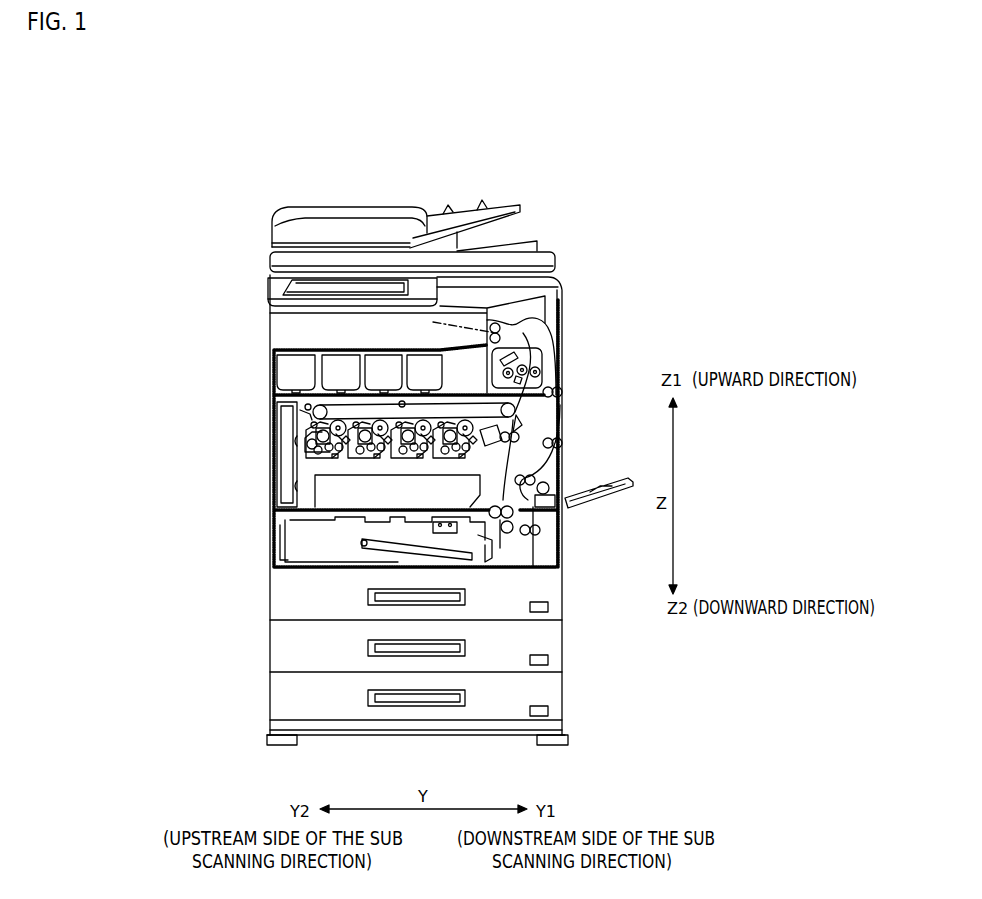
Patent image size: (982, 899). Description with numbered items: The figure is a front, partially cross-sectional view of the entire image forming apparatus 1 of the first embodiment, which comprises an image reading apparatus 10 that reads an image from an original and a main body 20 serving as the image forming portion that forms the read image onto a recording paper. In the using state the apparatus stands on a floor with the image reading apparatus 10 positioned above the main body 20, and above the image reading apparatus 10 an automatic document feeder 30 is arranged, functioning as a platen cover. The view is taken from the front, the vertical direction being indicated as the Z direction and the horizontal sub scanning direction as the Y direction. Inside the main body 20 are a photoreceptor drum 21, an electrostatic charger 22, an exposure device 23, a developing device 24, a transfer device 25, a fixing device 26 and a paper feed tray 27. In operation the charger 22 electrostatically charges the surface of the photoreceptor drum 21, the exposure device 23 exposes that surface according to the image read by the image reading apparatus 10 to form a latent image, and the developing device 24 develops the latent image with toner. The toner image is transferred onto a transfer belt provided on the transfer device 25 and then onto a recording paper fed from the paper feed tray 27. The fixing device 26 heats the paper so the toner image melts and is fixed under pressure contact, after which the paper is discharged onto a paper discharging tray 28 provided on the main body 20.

The image forming apparatus 1 is at (587, 218).
The image reading apparatus 10 is at (553, 255).
The main body 20 is at (268, 487).
The photoreceptor drum 21 is at (333, 450).
The electrostatic charger 22 is at (352, 462).
The exposure device 23 is at (481, 483).
The developing device 24 is at (326, 470).
The transfer device 25 is at (458, 402).
The fixing device 26 is at (550, 372).
The paper feed tray 27 is at (268, 703).
The paper discharging tray 28 is at (428, 350).
The automatic document feeder 30 is at (388, 206).